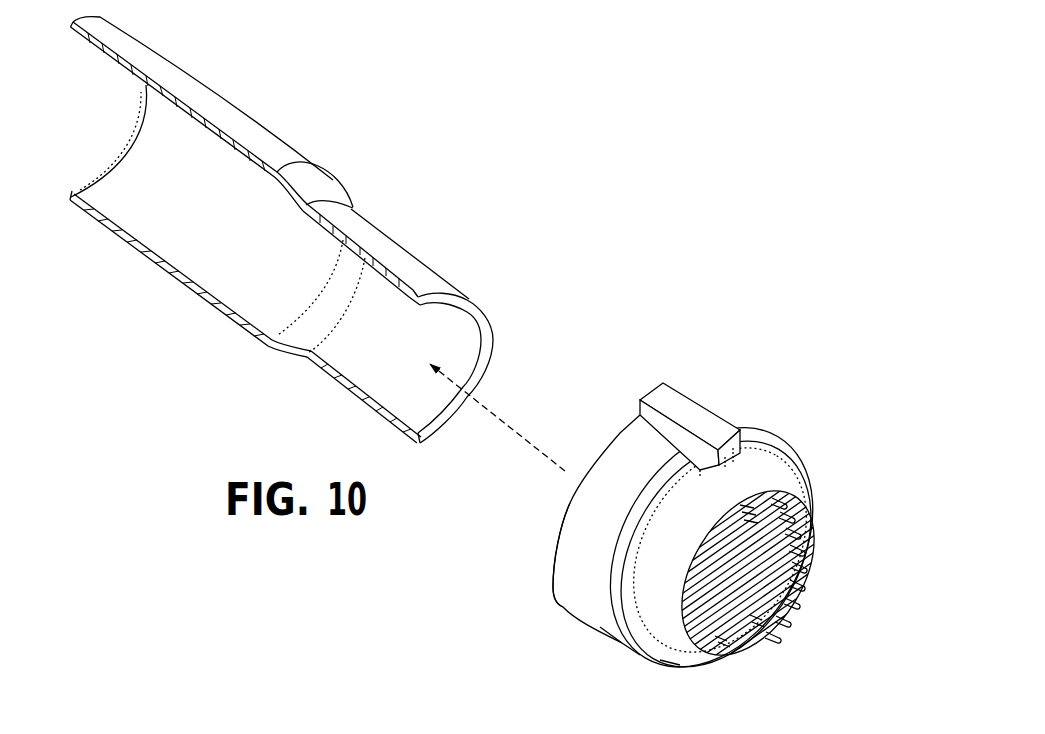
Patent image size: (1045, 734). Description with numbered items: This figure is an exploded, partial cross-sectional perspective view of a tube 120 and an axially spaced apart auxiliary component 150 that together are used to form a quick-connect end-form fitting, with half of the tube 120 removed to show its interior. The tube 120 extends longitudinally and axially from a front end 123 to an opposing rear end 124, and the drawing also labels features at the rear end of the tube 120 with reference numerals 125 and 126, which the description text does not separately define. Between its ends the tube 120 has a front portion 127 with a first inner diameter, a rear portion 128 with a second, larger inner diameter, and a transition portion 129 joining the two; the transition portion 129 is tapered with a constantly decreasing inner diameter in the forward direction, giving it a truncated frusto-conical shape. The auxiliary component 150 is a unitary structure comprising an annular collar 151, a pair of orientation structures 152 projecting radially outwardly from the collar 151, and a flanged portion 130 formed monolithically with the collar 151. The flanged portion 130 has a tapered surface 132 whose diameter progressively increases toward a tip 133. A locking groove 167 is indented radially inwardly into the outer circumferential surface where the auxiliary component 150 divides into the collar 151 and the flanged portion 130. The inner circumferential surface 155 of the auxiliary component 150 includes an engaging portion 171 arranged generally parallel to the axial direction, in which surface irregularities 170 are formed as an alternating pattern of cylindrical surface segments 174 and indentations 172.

The tube 120 is at (323, 125).
The front end 123 is at (486, 347).
The rear end 124 is at (103, 172).
The inner end edge 125 is at (143, 160).
The upper wall of large diameter portion 126 is at (200, 93).
The front portion 127 is at (318, 392).
The rear portion 128 is at (121, 257).
The transition portion 129 is at (268, 358).
The flanged portion 130 is at (791, 467).
The tapered surface 132 is at (672, 661).
The tip 133 is at (632, 656).
The auxiliary component 150 is at (771, 406).
The annular collar 151 is at (582, 629).
The orientation structures 152 is at (701, 401).
The inner circumferential surface 155 is at (792, 560).
The locking groove 167 is at (621, 645).
The surface irregularities 170 is at (788, 575).
The engaging portion 171 is at (727, 647).
The indentations 172 is at (745, 624).
The cylindrical surface segments 174 is at (790, 527).